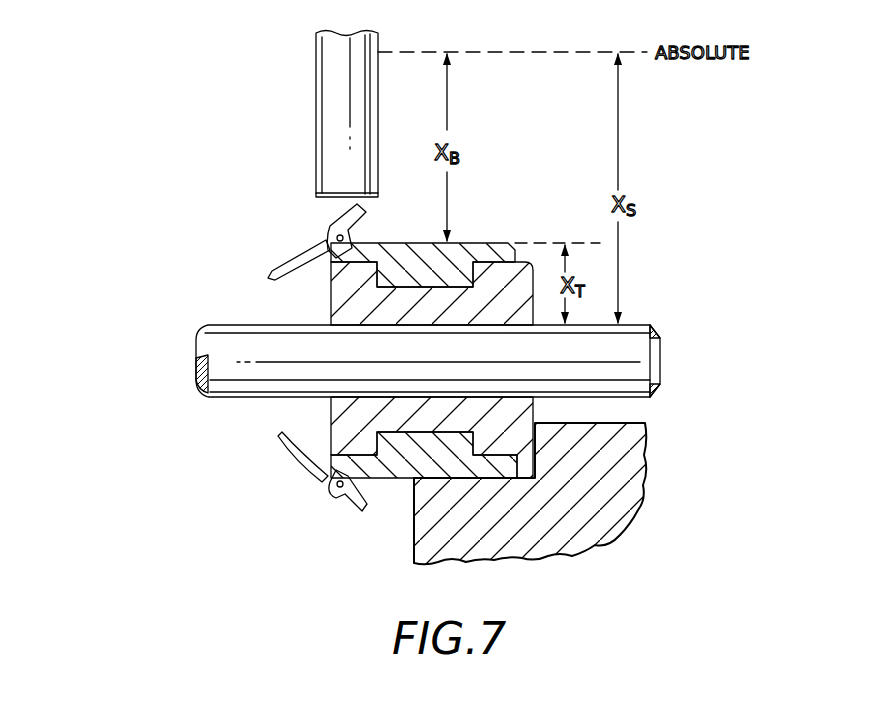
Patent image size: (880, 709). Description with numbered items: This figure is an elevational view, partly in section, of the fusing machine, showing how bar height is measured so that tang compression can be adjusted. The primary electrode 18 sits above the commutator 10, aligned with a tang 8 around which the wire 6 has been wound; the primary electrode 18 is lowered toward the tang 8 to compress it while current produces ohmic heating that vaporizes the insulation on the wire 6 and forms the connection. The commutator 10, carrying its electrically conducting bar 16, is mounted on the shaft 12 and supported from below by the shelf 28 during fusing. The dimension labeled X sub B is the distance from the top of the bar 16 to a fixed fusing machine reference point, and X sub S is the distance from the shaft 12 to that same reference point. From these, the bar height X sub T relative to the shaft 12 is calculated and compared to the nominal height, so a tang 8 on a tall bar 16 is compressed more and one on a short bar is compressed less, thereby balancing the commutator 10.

The primary electrode 18 is at (316, 84).
The commutator bar 16 is at (492, 243).
The commutator 10 is at (331, 291).
The shaft 12 is at (641, 322).
The shelf 28 is at (638, 418).
The tang 8 is at (332, 222).
The wire 6 is at (294, 262).